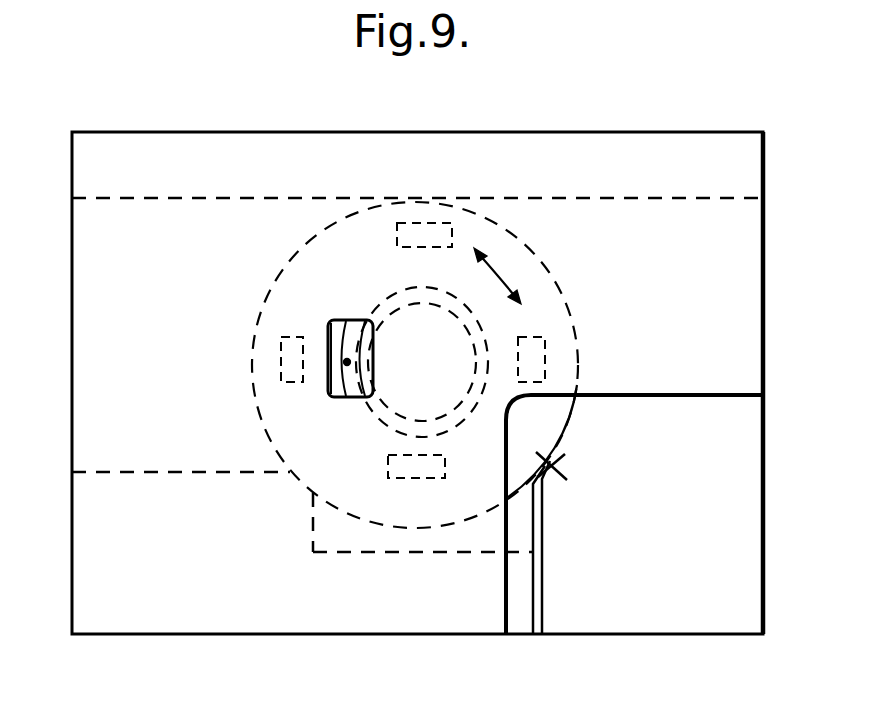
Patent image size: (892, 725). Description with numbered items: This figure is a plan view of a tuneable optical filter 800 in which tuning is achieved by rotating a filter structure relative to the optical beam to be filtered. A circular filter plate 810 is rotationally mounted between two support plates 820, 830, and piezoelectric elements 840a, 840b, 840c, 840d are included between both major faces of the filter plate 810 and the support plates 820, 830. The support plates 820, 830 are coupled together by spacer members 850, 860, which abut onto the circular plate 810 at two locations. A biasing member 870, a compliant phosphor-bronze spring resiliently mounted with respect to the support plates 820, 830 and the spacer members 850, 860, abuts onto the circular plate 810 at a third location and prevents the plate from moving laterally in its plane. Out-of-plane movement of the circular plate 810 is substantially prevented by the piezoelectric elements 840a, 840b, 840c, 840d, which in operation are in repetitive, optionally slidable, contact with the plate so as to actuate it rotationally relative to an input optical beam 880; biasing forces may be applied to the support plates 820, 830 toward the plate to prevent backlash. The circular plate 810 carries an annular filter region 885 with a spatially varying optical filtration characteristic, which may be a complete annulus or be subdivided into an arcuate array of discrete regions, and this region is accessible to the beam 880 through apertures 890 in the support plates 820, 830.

The tuneable optical filter 800 is at (665, 119).
The circular filter plate 810 is at (360, 277).
The support plate 820 is at (200, 292).
The support plate 830 is at (700, 598).
The piezoelectric element 840a is at (400, 224).
The piezoelectric element 840b is at (532, 356).
The piezoelectric element 840c is at (413, 466).
The piezoelectric element 840d is at (283, 361).
The spacer member 850 is at (293, 181).
The spacer member 860 is at (195, 600).
The biasing member 870 is at (544, 512).
The input optical beam 880 is at (347, 362).
The annular filter region 885 is at (383, 418).
The aperture 890 is at (365, 368).